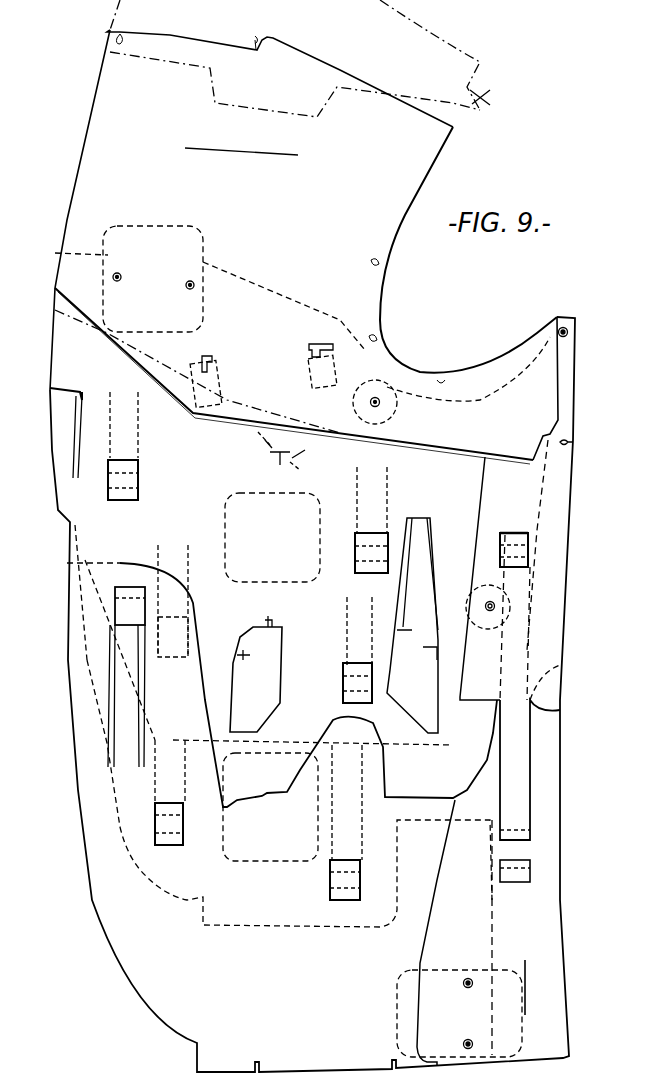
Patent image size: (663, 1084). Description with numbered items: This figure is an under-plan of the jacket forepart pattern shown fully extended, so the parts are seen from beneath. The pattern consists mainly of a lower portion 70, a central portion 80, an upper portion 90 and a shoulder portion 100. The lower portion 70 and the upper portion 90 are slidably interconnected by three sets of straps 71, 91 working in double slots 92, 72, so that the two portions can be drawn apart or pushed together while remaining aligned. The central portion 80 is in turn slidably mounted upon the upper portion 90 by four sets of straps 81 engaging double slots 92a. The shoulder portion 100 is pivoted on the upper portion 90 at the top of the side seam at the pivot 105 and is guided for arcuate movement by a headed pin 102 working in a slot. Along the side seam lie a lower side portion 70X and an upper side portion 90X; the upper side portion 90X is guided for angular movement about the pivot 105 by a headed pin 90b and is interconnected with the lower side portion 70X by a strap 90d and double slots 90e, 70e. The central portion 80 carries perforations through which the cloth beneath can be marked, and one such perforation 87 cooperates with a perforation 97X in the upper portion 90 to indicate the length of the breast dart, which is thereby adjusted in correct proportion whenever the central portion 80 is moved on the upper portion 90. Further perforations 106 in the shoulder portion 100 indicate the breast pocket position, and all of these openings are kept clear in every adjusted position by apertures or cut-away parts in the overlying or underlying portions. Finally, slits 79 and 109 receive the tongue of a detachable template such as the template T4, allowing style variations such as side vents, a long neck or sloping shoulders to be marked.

The detachable template T4 is at (470, 113).
The shoulder portion 100 is at (338, 207).
The slit 109 is at (205, 149).
The perforations 106 is at (308, 349).
The headed pin 102 is at (376, 400).
The pivot 105 is at (561, 330).
The lower portion 70 is at (260, 1004).
The upper portion 90 is at (196, 481).
The perforation 97X is at (270, 455).
The central portion 80 is at (72, 477).
The upper side portion 90X is at (540, 504).
The double slot 90e is at (517, 532).
The headed pin 90b is at (494, 606).
The strap 90d is at (520, 806).
The double slot 70e is at (520, 853).
The lower side portion 70X is at (506, 950).
The slit 79 is at (530, 985).
The straps 81 is at (113, 408).
The double slots 92a is at (130, 500).
The double slot 92 is at (120, 606).
The strap 71 is at (120, 700).
The perforation 87 is at (263, 627).
The straps 91 is at (163, 790).
The double slots 72 is at (160, 812).